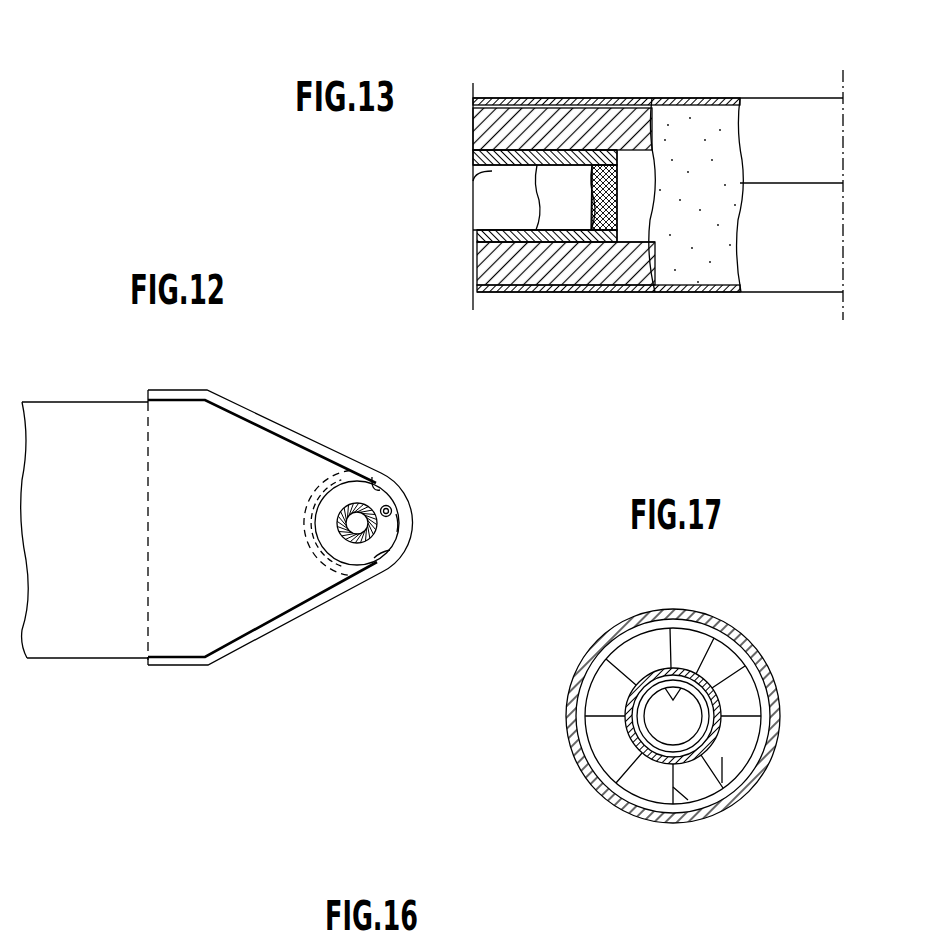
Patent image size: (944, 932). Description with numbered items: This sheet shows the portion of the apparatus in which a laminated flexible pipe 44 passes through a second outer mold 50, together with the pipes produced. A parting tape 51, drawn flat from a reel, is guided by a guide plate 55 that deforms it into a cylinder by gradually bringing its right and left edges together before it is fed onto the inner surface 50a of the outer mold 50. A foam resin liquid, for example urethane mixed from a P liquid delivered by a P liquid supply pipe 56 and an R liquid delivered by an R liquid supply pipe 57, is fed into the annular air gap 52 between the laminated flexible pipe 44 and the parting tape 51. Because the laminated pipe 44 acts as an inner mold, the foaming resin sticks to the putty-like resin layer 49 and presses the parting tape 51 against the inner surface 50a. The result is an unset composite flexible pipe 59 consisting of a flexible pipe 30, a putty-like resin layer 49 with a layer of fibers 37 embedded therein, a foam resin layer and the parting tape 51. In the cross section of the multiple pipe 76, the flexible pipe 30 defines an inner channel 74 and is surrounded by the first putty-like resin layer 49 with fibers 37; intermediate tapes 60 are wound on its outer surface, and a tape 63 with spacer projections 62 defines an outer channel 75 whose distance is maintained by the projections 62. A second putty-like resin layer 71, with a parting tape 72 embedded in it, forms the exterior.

In FIG. 13, the flexible pipe 30 is at (550, 198).
In FIG. 17, the flexible pipe 30 is at (683, 688).
In FIG. 13, the layer of fibers 37 is at (607, 202).
In FIG. 13, the laminated flexible pipe 44 is at (470, 242).
In FIG. 12, the laminated flexible pipe 44 is at (351, 500).
In FIG. 13, the putty-like resin layer 49 is at (632, 167).
In FIG. 17, the putty-like resin layer 49 is at (643, 668).
In FIG. 13, the second outer mold 50 is at (693, 135).
In FIG. 12, the second outer mold 50 is at (404, 522).
In FIG. 12, the inner surface of the outer mold 50a is at (375, 478).
In FIG. 13, the parting tape 51 is at (555, 292).
In FIG. 12, the parting tape 51 is at (85, 415).
In FIG. 12, the annular air gap 52 is at (349, 560).
In FIG. 12, the guide plate 55 is at (195, 392).
In FIG. 12, the P liquid supply pipe 56 is at (397, 530).
In FIG. 12, the R liquid supply pipe 57 is at (392, 507).
In FIG. 13, the unset composite flexible pipe 59 is at (753, 96).
In FIG. 17, the intermediate tape 60 is at (745, 745).
In FIG. 17, the spacer projections 62 is at (733, 750).
In FIG. 17, the tape having spacer projections 63 is at (633, 803).
In FIG. 17, the second putty-like resin layer 71 is at (772, 727).
In FIG. 17, the parting tape 72 is at (738, 638).
In FIG. 17, the inner channel 74 is at (674, 716).
In FIG. 17, the outer channel 75 is at (612, 748).
In FIG. 17, the unset multiple pipe 76 is at (566, 688).